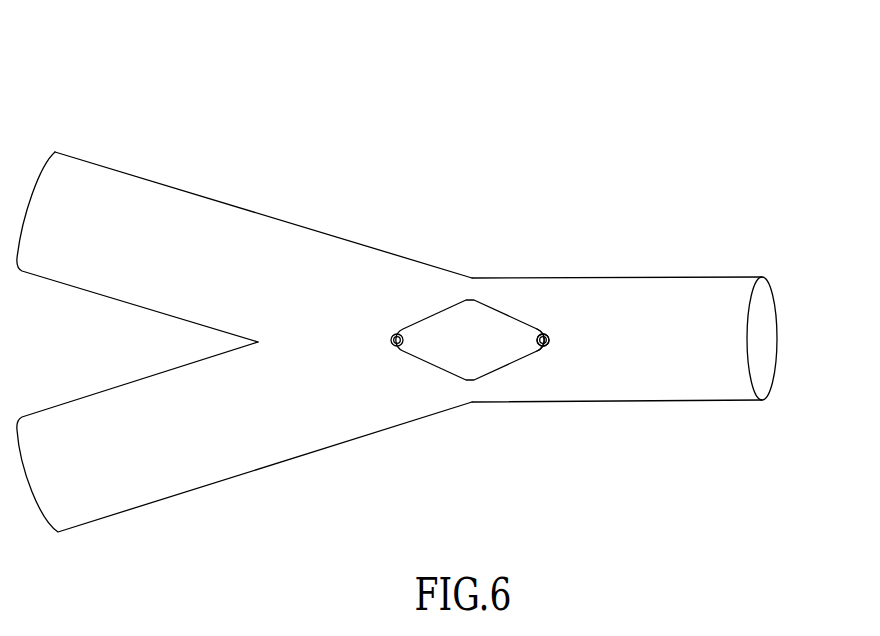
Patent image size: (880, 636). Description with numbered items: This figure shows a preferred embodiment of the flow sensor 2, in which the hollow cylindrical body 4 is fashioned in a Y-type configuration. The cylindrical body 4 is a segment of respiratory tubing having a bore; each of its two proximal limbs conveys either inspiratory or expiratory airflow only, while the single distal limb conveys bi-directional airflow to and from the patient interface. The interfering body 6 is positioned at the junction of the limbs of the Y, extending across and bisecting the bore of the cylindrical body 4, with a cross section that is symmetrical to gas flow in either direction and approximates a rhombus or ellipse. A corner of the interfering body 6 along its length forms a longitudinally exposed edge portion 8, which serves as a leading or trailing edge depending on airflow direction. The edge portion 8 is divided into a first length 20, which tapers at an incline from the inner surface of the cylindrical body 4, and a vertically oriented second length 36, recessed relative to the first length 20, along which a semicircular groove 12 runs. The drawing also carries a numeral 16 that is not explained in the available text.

The flow sensor 2 is at (221, 122).
The hollow cylindrical body 4 is at (697, 277).
The interfering body 6 is at (432, 310).
The longitudinally exposed edge portion 8 is at (583, 338).
The semicircular groove 12 is at (537, 345).
The rivet head 16 is at (546, 333).
The first length 20 is at (550, 337).
The second length 36 is at (538, 335).